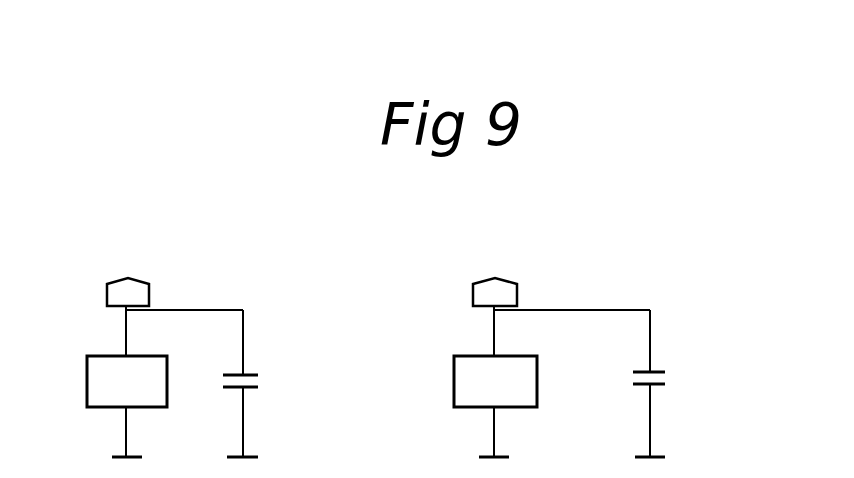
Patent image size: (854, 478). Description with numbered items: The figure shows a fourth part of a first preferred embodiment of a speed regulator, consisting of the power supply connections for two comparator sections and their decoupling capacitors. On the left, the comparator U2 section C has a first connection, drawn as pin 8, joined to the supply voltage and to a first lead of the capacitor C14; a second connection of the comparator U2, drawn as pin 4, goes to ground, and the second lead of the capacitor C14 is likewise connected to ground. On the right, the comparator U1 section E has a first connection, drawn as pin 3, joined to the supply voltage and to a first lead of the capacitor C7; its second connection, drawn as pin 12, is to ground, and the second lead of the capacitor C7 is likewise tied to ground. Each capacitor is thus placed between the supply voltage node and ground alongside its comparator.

The comparator U2 is at (165, 376).
The capacitor C14 is at (271, 392).
The comparator U1 is at (552, 376).
The capacitor C7 is at (679, 392).
The pin 8 (V+) connection of U2 8 is at (125, 333).
The pin 4 (GND) connection of U2 4 is at (125, 432).
The pin 3 (V+) connection of U1 3 is at (492, 333).
The pin 12 (V-) connection of U1 12 is at (492, 432).